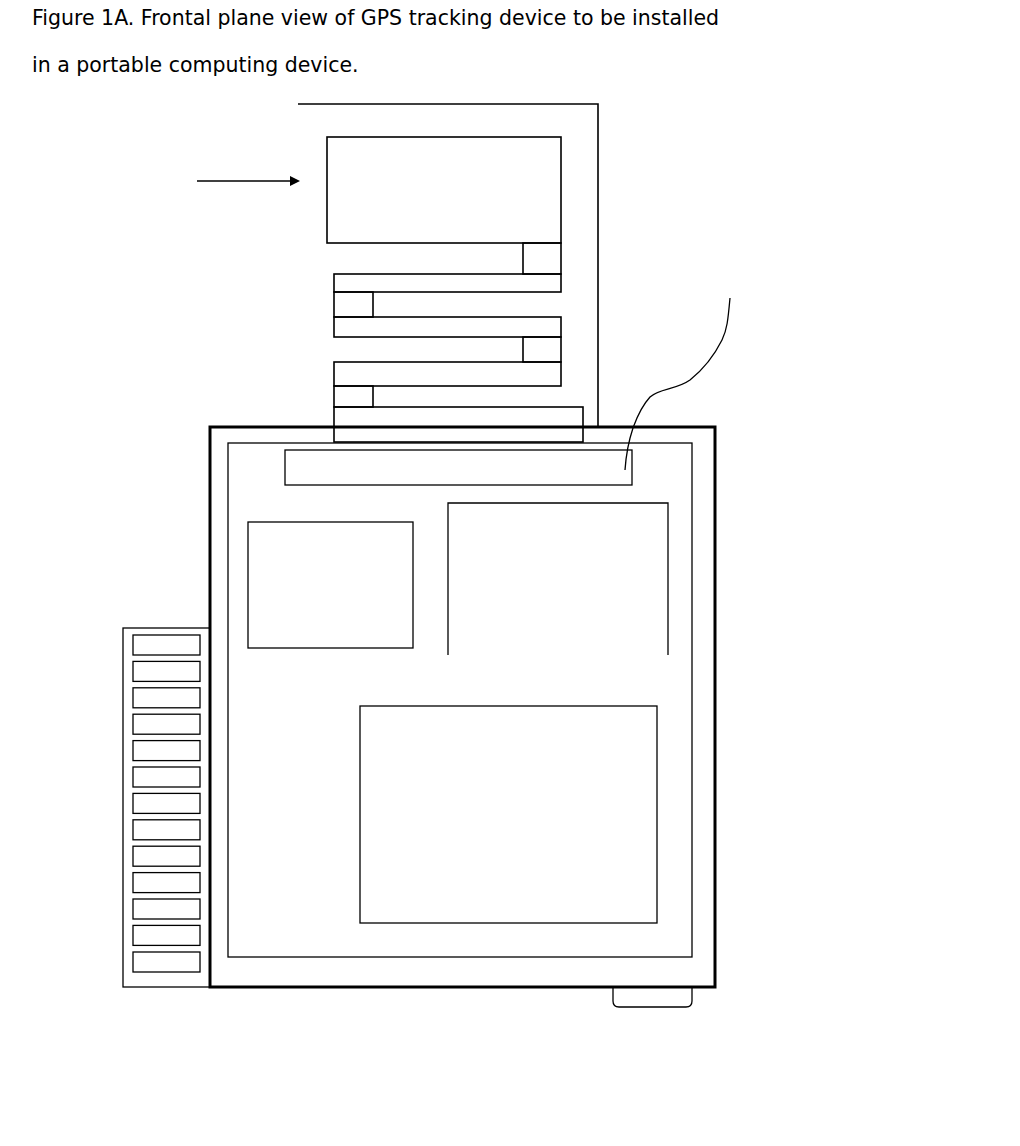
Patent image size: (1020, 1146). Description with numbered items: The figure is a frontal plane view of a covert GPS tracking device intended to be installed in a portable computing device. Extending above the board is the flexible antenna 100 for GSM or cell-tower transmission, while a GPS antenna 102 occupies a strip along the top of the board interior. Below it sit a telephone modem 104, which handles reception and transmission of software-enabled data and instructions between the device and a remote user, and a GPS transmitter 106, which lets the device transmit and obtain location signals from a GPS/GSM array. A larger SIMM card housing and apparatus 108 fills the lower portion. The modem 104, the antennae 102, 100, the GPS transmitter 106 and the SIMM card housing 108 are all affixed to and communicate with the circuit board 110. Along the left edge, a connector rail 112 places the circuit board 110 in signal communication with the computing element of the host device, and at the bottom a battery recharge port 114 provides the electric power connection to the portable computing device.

The flexible antenna 100 is at (320, 273).
The GPS antenna 102 is at (577, 391).
The telephone modem 104 is at (330, 585).
The GPS transmitter 106 is at (558, 579).
The SIMM card housing and apparatus 108 is at (508, 814).
The circuit board 110 is at (521, 707).
The connector rail 112 is at (192, 995).
The battery recharge port 114 is at (757, 1012).